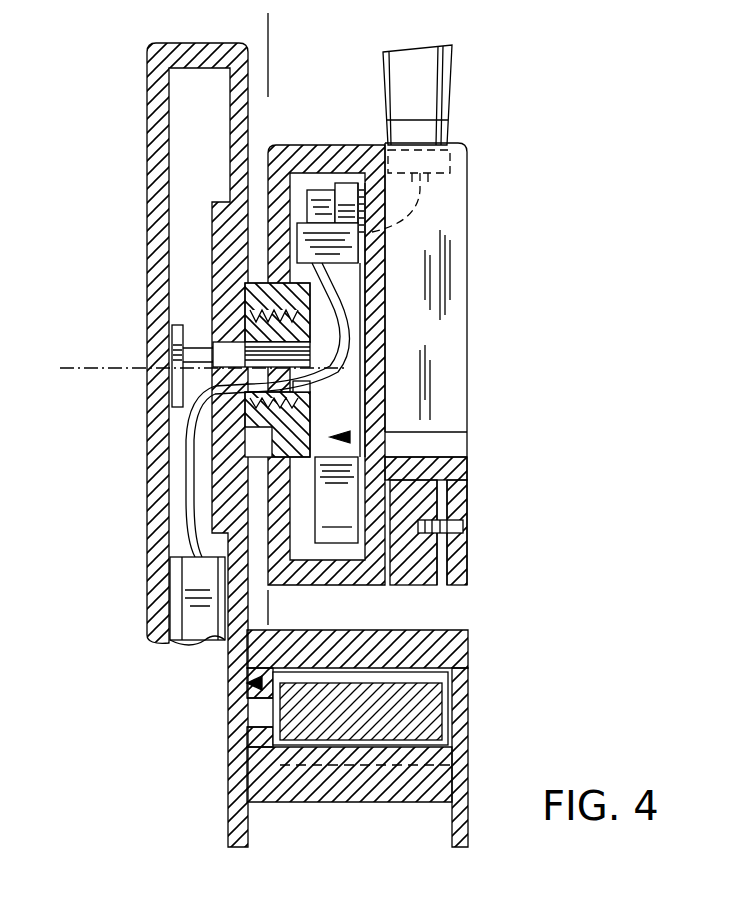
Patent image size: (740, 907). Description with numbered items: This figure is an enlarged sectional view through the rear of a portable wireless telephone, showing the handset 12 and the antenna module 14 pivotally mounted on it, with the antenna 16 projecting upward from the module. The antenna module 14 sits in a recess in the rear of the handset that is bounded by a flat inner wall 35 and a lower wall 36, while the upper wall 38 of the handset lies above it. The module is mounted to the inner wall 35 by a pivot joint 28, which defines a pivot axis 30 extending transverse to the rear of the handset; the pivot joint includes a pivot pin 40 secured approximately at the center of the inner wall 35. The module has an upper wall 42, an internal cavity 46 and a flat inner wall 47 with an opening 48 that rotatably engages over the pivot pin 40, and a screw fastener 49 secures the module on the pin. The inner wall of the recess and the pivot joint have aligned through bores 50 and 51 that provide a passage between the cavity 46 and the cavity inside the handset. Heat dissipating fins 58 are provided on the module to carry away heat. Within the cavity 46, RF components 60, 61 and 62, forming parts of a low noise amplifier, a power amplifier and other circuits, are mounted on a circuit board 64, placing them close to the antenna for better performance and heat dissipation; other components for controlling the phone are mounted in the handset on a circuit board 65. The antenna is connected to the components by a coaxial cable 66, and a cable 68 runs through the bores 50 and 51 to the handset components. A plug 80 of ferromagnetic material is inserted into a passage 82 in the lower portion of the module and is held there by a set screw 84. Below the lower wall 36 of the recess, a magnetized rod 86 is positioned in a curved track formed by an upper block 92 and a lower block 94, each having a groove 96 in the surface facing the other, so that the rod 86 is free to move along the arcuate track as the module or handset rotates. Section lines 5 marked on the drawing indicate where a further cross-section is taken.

The section line 5- 5 is at (282, 22).
The handset 12 is at (115, 550).
The antenna module 14 is at (495, 238).
The antenna 16 is at (437, 91).
The pivot joint 28 is at (435, 437).
The pivot axis 30 is at (80, 368).
The flat inner wall 35 is at (250, 70).
The lower wall 36 is at (463, 664).
The upper wall 38 is at (200, 68).
The pivot pin 40 is at (225, 420).
The upper wall 42 is at (349, 147).
The internal cavity 46 is at (350, 375).
The flat inner wall 47 is at (278, 185).
The opening 48 is at (240, 300).
The screw fastener 49 is at (345, 325).
The through bore 50 is at (215, 350).
The through bore 51 is at (305, 388).
The heat dissipating fins 58 is at (450, 318).
The RF component 60 is at (322, 198).
The RF component 61 is at (340, 258).
The RF component 62 is at (336, 487).
The circuit board 64 is at (360, 232).
The circuit board 65 is at (207, 638).
The coaxial cable 66 is at (425, 190).
The cable 68 is at (176, 480).
The plug 80 is at (406, 585).
The passage 82 is at (455, 605).
The set screw 84 is at (462, 525).
The magnetized rod 86 is at (420, 717).
The upper block 92 is at (248, 682).
The lower block 94 is at (386, 800).
The groove 96 is at (265, 724).